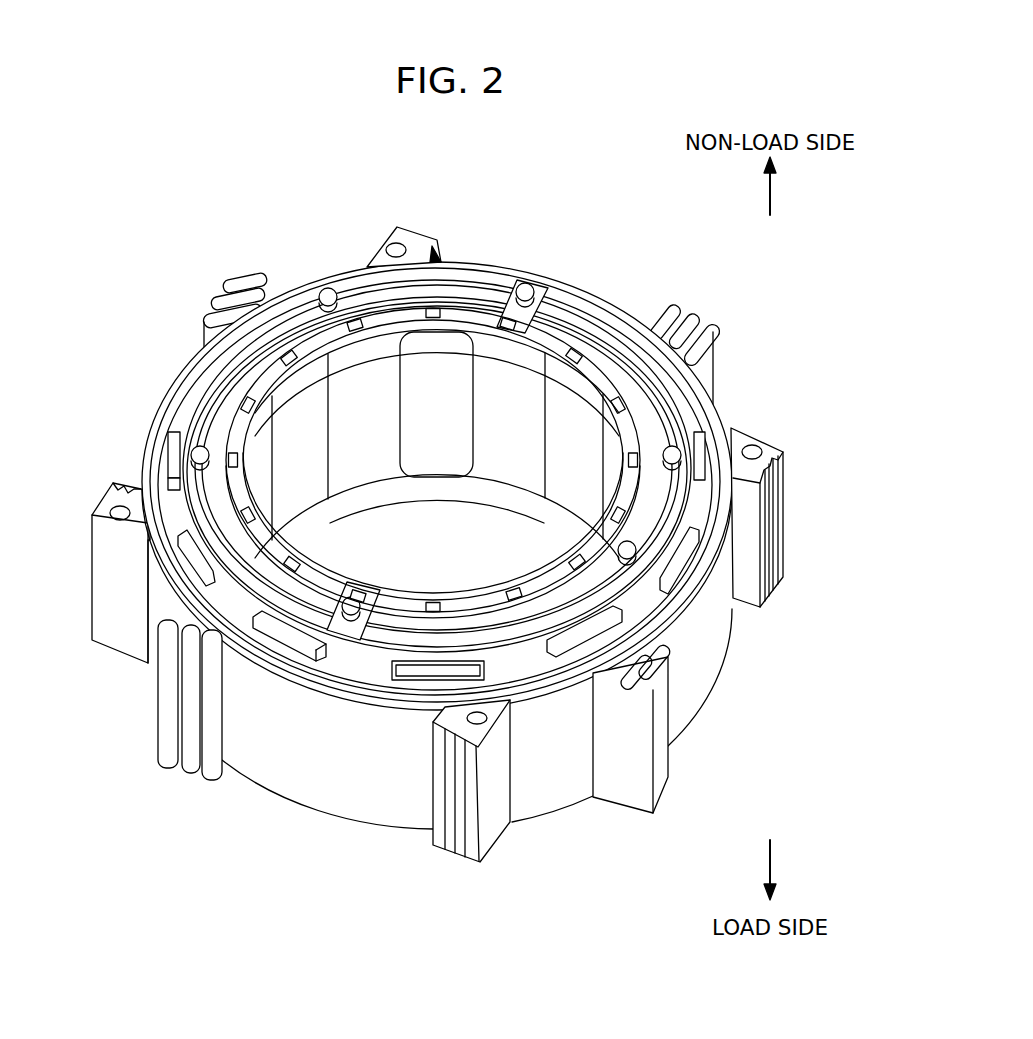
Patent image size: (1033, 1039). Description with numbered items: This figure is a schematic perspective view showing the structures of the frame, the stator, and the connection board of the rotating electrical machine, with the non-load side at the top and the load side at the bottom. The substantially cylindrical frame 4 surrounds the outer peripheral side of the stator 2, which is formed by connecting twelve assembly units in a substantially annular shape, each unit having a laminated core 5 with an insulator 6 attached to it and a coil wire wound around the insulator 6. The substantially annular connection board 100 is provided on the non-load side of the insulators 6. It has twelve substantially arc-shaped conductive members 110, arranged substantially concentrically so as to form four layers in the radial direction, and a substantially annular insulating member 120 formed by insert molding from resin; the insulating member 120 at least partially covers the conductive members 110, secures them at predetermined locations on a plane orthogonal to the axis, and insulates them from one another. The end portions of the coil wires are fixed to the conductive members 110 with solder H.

The stator 2 is at (152, 452).
The frame 4 is at (260, 752).
The laminated core 5 is at (430, 430).
The insulator 6 is at (305, 385).
The connection board 100 is at (174, 518).
The conductive member 110 is at (292, 300).
The insulating member 120 is at (612, 330).
The solder H is at (360, 640).